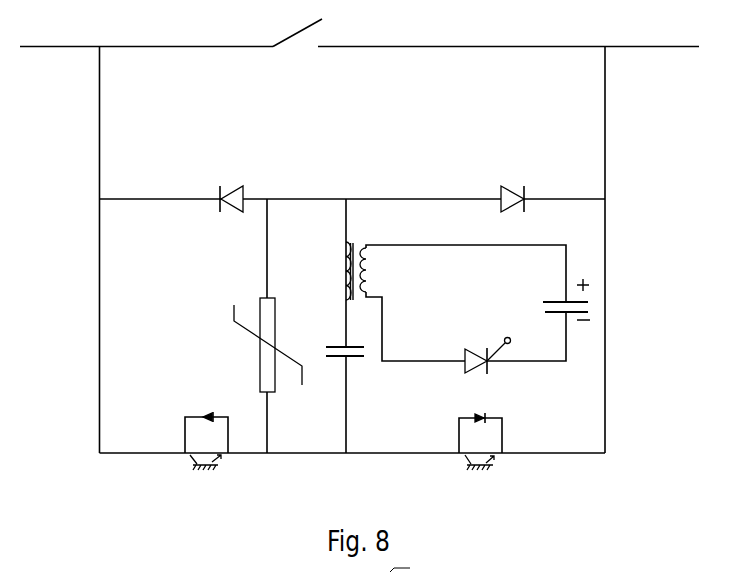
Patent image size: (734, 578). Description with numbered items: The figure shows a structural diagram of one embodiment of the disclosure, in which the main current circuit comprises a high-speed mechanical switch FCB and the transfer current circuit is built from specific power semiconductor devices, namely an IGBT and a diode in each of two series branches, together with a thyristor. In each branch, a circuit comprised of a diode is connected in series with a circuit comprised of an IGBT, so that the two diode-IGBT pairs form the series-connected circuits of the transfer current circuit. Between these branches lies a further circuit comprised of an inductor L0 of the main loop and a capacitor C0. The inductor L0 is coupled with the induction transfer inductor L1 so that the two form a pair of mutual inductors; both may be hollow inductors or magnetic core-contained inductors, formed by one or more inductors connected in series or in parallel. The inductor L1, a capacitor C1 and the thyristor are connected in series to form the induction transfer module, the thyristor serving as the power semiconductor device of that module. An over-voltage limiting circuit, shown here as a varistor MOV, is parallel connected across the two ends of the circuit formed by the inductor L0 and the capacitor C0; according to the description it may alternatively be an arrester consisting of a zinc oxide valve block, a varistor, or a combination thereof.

The high-speed mechanical switch FCB is at (298, 48).
The element diode is at (373, 179).
The over-voltage limiting circuit MOV is at (247, 342).
The inductor of the main loop L0 is at (329, 271).
The induction transfer inductor L1 is at (463, 303).
The capacitor C0 is at (338, 372).
The capacitor C1 is at (558, 289).
The element thyristor is at (493, 343).
The element IGBT is at (348, 436).